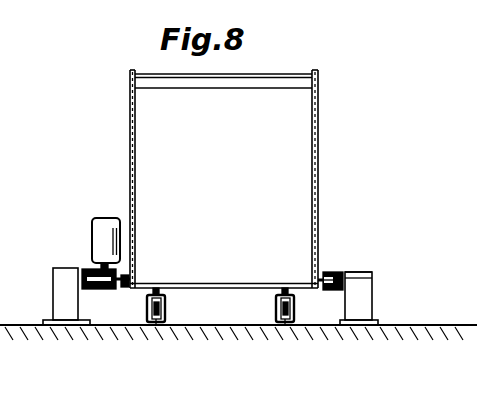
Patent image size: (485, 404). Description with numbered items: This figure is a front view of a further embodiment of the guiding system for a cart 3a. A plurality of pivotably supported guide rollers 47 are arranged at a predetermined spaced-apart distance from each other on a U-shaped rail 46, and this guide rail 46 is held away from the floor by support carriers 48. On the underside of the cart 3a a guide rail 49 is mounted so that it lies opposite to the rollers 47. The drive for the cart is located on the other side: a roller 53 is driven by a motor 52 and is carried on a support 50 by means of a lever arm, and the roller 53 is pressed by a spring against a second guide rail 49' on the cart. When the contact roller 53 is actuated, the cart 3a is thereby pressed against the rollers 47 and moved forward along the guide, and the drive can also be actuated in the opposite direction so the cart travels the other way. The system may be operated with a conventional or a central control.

The cart 3a is at (143, 287).
The U-shaped rail 46 is at (340, 272).
The guide rollers 47 is at (352, 278).
The support carriers 48 is at (363, 307).
The guide rail 49 is at (334, 248).
The second guide rail 49' is at (103, 324).
The support 50 is at (60, 292).
The motor 52 is at (105, 229).
The roller 53 is at (84, 269).